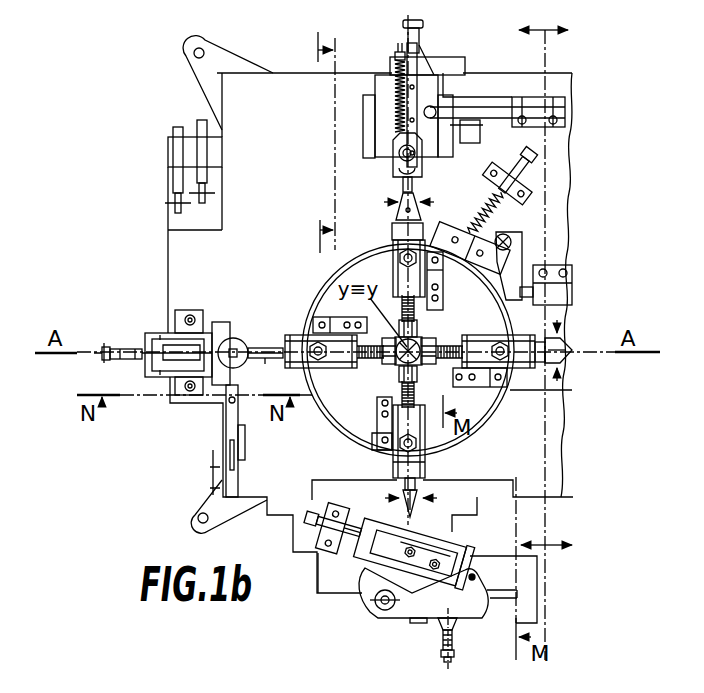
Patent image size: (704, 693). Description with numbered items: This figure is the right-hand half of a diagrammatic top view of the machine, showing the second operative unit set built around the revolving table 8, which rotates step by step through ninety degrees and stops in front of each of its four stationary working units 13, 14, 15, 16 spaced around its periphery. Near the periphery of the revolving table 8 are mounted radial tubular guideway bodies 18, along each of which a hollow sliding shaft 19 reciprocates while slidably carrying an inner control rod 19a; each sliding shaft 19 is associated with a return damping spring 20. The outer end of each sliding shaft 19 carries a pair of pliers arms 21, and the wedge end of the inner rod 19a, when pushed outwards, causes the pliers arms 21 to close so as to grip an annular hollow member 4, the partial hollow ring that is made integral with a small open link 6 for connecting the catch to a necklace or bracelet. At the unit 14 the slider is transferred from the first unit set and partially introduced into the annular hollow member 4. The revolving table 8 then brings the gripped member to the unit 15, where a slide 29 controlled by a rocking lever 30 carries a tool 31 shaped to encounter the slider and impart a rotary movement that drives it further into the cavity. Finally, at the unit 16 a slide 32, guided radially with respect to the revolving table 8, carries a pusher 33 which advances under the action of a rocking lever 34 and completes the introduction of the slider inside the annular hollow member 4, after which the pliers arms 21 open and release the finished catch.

The annular hollow member 4 is at (404, 158).
The small open link 6 is at (412, 152).
The revolving table 8 is at (309, 406).
The stationary working unit 13 is at (357, 120).
The stationary working unit 14 is at (561, 318).
The stationary working unit 15 is at (346, 598).
The stationary working unit 16 is at (199, 410).
The supporting radial tubular guideway body 18 is at (434, 438).
The hollow sliding shaft 19 is at (270, 347).
The inner rod 19a is at (421, 376).
The return damping spring 20 is at (370, 358).
The pliers arms 21 is at (238, 342).
The slide 29 is at (457, 558).
The rocking lever 30 is at (478, 600).
The tool 31 is at (438, 532).
The slide 32 is at (183, 368).
The pusher 33 is at (230, 343).
The rocking lever 34 is at (130, 347).